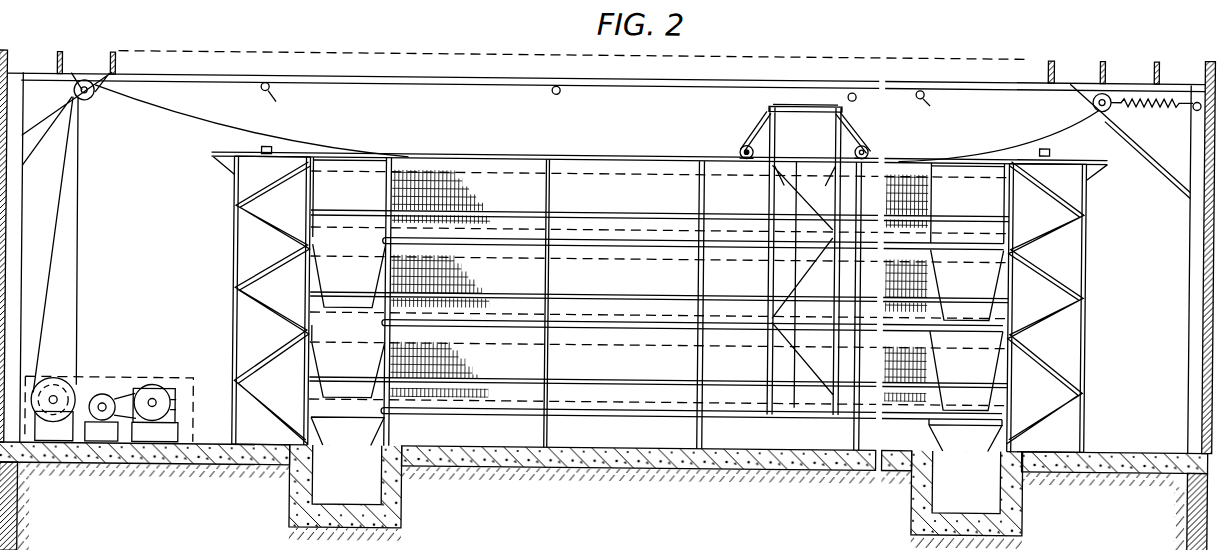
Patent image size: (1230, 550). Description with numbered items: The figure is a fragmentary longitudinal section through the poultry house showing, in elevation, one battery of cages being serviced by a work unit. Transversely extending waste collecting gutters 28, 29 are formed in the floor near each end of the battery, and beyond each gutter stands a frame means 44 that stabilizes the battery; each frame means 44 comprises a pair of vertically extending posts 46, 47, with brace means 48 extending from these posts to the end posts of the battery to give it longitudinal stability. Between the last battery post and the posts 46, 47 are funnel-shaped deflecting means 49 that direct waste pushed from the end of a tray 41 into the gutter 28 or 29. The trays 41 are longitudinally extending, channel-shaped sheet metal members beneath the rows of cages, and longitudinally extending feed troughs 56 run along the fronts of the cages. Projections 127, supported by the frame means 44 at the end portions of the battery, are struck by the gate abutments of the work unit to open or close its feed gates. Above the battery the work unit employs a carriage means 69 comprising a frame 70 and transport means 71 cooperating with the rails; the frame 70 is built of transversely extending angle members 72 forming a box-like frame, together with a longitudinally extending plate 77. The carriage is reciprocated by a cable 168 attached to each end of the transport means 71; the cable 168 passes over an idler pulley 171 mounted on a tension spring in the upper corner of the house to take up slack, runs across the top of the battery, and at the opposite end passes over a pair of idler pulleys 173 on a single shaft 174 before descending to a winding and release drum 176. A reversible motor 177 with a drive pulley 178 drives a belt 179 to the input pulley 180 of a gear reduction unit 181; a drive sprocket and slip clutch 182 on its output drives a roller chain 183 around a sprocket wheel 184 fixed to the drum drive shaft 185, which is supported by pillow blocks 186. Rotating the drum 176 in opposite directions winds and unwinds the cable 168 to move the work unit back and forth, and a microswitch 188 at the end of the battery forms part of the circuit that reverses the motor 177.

The waste collecting gutter 28 is at (362, 490).
The waste collecting gutter 29 is at (1012, 484).
The tray 41 is at (605, 238).
The frame means 44 is at (231, 230).
The post 46 is at (307, 280).
The post 47 is at (233, 266).
The brace means 48 is at (278, 220).
The funnel-shaped deflecting means 49 is at (360, 279).
The feed trough 56 is at (628, 204).
The carriage means 69 is at (744, 121).
The frame 70 is at (850, 132).
The transport means 71 is at (739, 142).
The angle member 72 is at (766, 103).
The longitudinally extending plate 77 is at (658, 302).
The projection 127 is at (319, 191).
The cable 168 is at (227, 121).
The idler pulley 171 is at (1094, 93).
The idler pulley 173 is at (91, 98).
The shaft 174 is at (75, 85).
The winding and release drum 176 is at (55, 394).
The reversible motor 177 is at (113, 391).
The drive pulley 178 is at (131, 377).
The belt 179 is at (102, 432).
The input pulley 180 is at (155, 432).
The gear reduction unit 181 is at (174, 411).
The drive sprocket and slip clutch 182 is at (176, 401).
The roller chain 183 is at (126, 394).
The sprocket wheel 184 is at (54, 426).
The drive shaft 185 is at (90, 369).
The pillow block 186 is at (88, 348).
The microswitch 188 is at (263, 145).